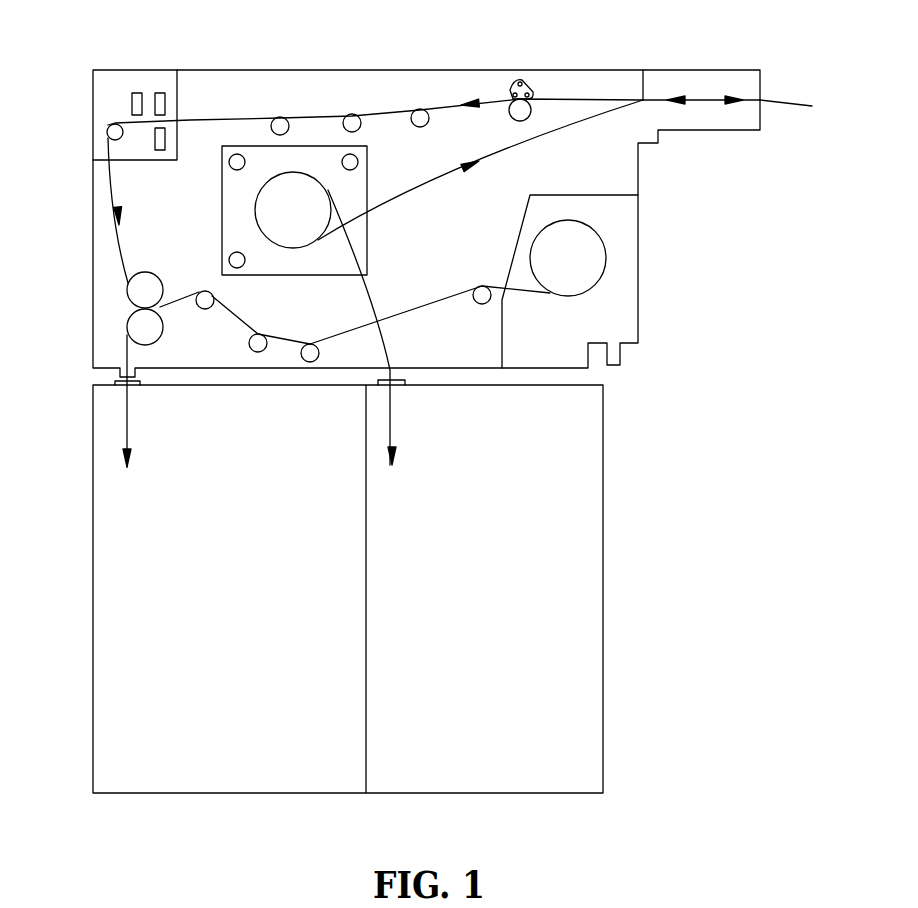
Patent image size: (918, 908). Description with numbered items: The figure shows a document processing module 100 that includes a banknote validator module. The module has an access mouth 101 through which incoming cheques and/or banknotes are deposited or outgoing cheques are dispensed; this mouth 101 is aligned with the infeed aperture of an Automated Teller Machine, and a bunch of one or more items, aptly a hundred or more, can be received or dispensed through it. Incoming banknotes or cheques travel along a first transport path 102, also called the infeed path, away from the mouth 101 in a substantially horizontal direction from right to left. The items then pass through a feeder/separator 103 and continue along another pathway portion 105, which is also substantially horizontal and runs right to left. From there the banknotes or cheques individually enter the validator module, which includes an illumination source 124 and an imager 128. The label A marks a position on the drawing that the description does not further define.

The document processing module 100 is at (215, 70).
The access mouth 101 is at (777, 87).
The first transport path 102 is at (590, 100).
The feeder/separator 103 is at (513, 87).
The pathway portion 105 is at (223, 117).
The illumination source 124 is at (165, 148).
The imager 128 is at (158, 92).
The position A is at (645, 100).